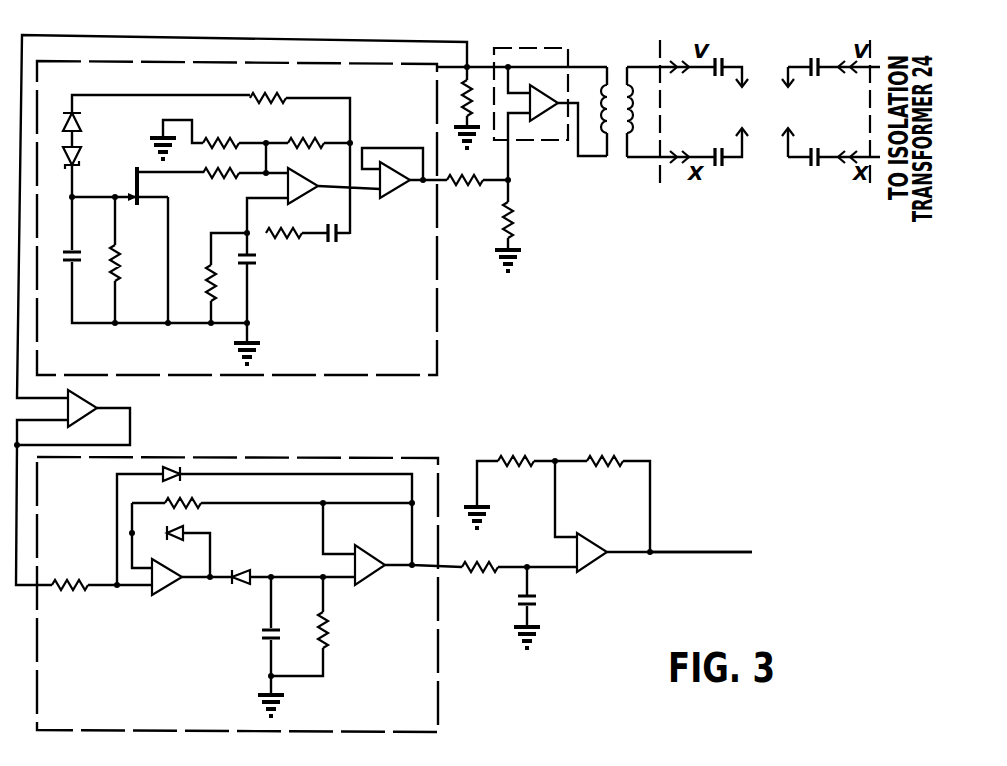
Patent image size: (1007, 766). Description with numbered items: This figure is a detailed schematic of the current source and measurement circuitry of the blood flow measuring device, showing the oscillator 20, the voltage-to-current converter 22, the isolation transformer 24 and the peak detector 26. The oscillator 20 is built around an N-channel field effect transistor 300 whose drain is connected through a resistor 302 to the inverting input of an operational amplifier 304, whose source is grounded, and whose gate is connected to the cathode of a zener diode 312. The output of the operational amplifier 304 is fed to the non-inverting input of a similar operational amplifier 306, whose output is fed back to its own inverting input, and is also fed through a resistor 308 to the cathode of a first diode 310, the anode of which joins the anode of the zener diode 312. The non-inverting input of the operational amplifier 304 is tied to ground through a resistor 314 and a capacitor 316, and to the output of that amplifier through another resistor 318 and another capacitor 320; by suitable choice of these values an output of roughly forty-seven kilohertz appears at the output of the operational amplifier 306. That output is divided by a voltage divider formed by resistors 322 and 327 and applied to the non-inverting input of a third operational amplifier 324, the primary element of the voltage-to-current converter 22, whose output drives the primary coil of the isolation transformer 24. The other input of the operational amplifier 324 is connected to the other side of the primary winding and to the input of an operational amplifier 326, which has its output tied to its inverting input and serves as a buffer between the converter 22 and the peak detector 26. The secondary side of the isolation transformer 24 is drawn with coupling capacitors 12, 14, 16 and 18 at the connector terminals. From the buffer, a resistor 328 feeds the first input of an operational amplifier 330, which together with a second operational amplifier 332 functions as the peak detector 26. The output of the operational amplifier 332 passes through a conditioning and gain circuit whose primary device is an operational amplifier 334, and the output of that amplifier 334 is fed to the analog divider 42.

The capacitor 12 is at (742, 88).
The capacitor 14 is at (791, 86).
The capacitor 16 is at (741, 129).
The capacitor 18 is at (790, 131).
The oscillator 20 is at (184, 62).
The voltage-to-current converter 22 is at (546, 50).
The isolation transformer 24 is at (616, 85).
The peak detector 26 is at (415, 458).
The analog divider 42 is at (858, 587).
The field effect transistor 300 is at (128, 193).
The resistor 302 is at (228, 180).
The operational amplifier 304 is at (303, 190).
The operational amplifier 306 is at (395, 197).
The resistor 308 is at (285, 100).
The first diode 310 is at (66, 112).
The zener diode 312 is at (83, 168).
The resistor 314 is at (205, 266).
The capacitor 316 is at (251, 267).
The resistor 318 is at (278, 238).
The capacitor 320 is at (338, 241).
The resistor 322 is at (471, 191).
The third operational amplifier 324 is at (540, 124).
The operational amplifier 326 is at (85, 404).
The resistor 327 is at (515, 219).
The resistor 328 is at (70, 593).
The operational amplifier 330 is at (170, 590).
The second operational amplifier 332 is at (376, 533).
The operational amplifier 334 is at (595, 541).